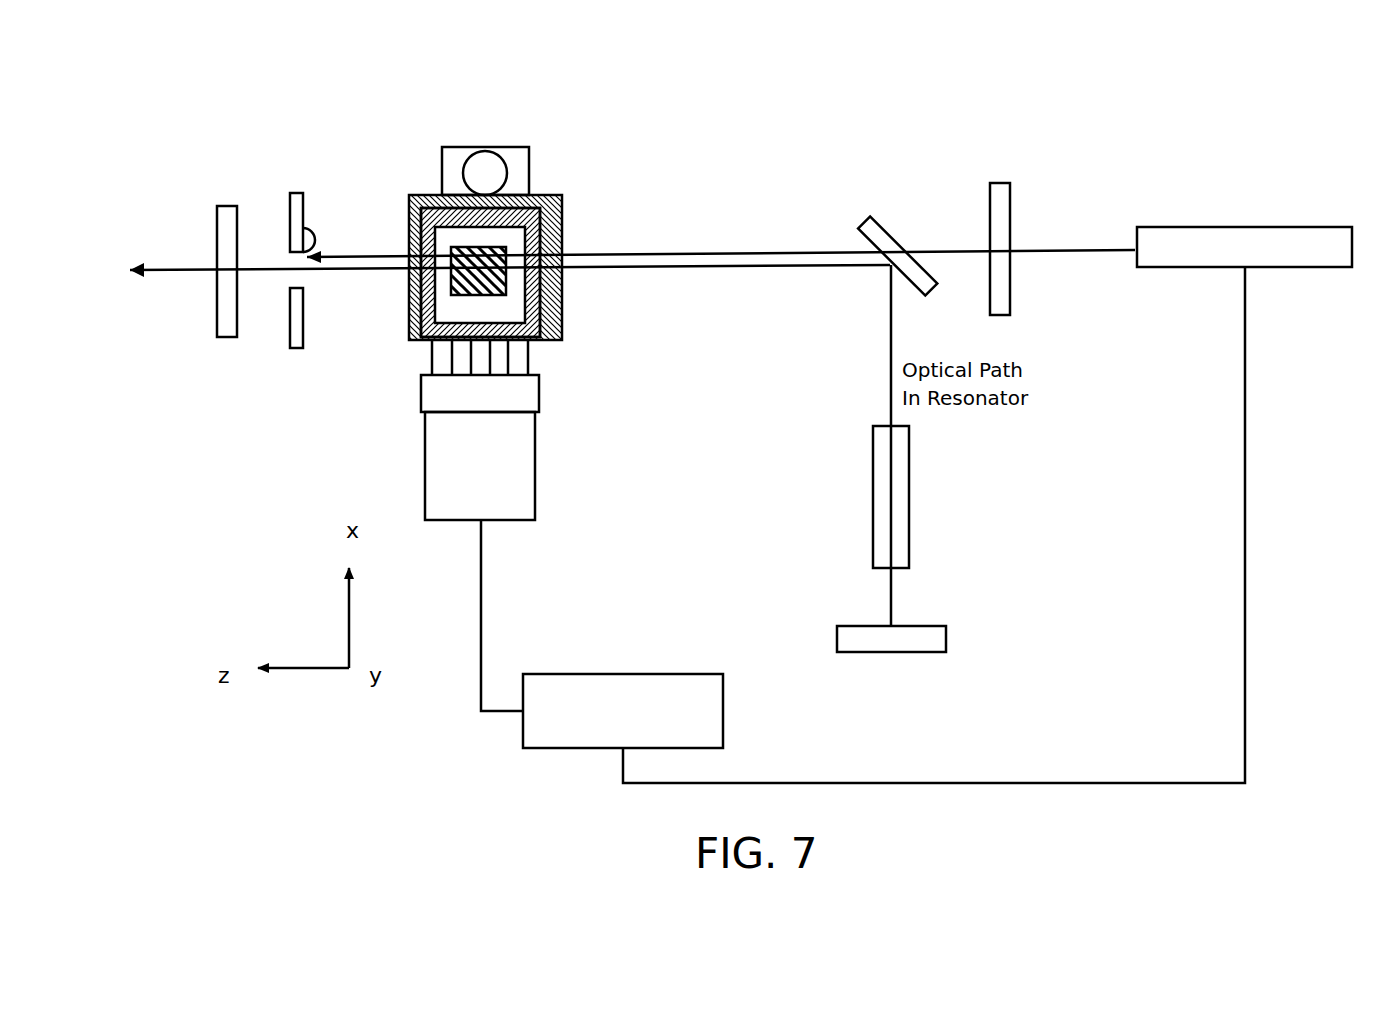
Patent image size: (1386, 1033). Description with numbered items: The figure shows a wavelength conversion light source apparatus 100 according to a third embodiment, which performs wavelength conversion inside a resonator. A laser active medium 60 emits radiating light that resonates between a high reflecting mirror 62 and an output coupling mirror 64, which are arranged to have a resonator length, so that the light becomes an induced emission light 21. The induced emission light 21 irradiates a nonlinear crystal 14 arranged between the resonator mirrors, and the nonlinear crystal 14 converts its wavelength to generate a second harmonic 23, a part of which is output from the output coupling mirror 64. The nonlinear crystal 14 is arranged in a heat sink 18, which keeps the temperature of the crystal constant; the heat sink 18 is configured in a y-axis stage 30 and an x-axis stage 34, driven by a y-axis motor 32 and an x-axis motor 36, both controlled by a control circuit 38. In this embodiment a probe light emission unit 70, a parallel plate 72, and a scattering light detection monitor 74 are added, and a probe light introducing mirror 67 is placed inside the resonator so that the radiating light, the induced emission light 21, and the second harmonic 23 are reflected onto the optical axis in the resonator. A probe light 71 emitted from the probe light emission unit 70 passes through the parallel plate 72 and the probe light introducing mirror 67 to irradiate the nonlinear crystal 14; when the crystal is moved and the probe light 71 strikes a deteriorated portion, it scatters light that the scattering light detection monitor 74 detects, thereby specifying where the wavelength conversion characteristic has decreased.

The wavelength conversion light source apparatus 100 is at (977, 117).
The nonlinear crystal 14 is at (498, 243).
The heat sink 18 is at (442, 313).
The induced emission light 21 is at (652, 268).
The second harmonic 23 is at (200, 290).
The y-axis stage 30 is at (562, 207).
The y-axis motor 32 is at (485, 153).
The x-axis stage 34 is at (540, 343).
The x-axis motor 36 is at (535, 498).
The control circuit 38 is at (605, 674).
The laser active medium 60 is at (909, 497).
The high reflecting mirror 62 is at (922, 627).
The output coupling mirror 64 is at (238, 210).
The probe light introducing mirror 67 is at (870, 217).
The probe light emission unit 70 is at (1245, 227).
The probe light 71 is at (638, 256).
The parallel plate 72 is at (1010, 232).
The scattering light detection monitor 74 is at (305, 212).